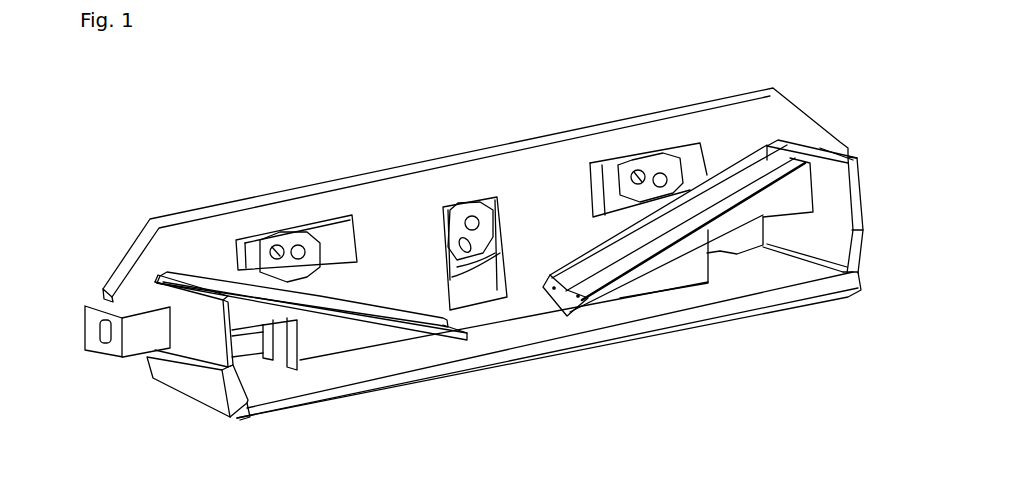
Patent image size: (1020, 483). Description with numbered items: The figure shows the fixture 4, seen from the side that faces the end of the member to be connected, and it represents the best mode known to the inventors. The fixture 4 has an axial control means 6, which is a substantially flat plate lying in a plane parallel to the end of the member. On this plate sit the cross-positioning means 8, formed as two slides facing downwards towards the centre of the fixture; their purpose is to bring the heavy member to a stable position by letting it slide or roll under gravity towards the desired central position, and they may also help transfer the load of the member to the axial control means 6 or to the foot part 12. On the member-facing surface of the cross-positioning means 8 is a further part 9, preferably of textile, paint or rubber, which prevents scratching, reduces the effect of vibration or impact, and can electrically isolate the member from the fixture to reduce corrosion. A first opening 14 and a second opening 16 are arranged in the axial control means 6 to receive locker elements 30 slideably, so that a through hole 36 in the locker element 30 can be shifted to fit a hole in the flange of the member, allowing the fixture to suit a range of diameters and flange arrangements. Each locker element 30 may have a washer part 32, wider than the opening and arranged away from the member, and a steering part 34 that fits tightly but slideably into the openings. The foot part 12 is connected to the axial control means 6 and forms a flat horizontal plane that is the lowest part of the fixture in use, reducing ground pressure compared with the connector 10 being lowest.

The fixture 4 is at (220, 165).
The axial control means 6 is at (389, 229).
The cross-positioning means 8 is at (568, 303).
The further part 9 is at (605, 257).
The connector 10 is at (137, 343).
The foot part 12 is at (747, 273).
The first opening 14 is at (684, 186).
The second opening 16 is at (483, 288).
The locker element 30 is at (450, 248).
The washer part 32 is at (460, 272).
The steering part 34 is at (458, 232).
The through hole 36 is at (296, 250).